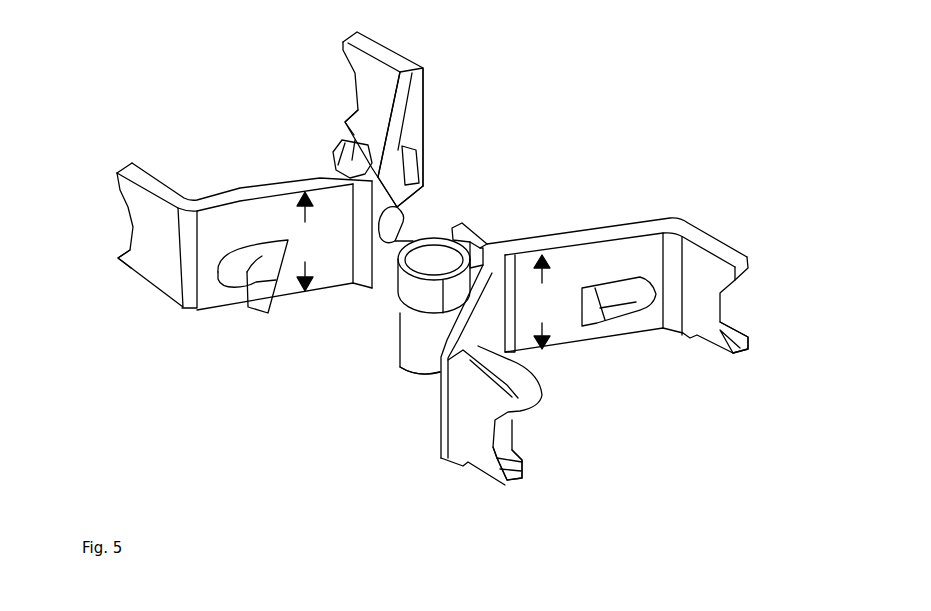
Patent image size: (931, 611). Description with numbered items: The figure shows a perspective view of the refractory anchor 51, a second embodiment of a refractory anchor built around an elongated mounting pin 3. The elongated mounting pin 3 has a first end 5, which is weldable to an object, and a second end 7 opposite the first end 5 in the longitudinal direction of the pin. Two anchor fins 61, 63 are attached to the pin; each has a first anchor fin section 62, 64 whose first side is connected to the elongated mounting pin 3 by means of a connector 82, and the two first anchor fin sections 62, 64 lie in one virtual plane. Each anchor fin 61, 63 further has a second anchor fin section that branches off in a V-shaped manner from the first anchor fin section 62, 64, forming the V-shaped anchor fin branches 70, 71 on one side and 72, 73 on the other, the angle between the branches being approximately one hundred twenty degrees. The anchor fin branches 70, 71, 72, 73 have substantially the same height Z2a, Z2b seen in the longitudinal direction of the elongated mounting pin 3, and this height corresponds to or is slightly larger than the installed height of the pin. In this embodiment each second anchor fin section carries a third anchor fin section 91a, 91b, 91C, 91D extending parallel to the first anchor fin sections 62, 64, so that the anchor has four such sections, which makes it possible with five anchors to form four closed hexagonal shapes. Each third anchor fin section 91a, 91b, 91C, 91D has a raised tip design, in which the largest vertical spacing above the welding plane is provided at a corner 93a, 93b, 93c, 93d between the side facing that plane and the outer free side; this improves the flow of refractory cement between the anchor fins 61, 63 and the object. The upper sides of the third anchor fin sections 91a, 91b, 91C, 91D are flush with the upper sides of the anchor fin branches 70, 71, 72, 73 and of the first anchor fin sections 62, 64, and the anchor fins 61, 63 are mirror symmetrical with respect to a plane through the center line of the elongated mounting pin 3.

The elongated mounting pin 3 is at (417, 332).
The first end 5 is at (438, 373).
The second end 7 is at (423, 258).
The refractory anchor 51 is at (550, 152).
The anchor fin 61 is at (240, 363).
The first anchor fin section 62 is at (400, 193).
The anchor fin 63 is at (426, 461).
The first anchor fin section 64 is at (465, 252).
The anchor fin branch 70 is at (258, 218).
The anchor fin branch 71 is at (410, 130).
The anchor fin branch 72 is at (530, 357).
The anchor fin branch 73 is at (565, 265).
The connector 82 is at (415, 295).
The third anchor fin section 91a is at (165, 243).
The third anchor fin section 91b is at (372, 66).
The third anchor fin section 91C is at (467, 425).
The third anchor fin section 91D is at (698, 268).
The corner 93a is at (118, 258).
The corner 93b is at (343, 122).
The corner 93c is at (530, 482).
The corner 93d is at (750, 350).
The height Z2a is at (313, 241).
The height Z2b is at (547, 302).